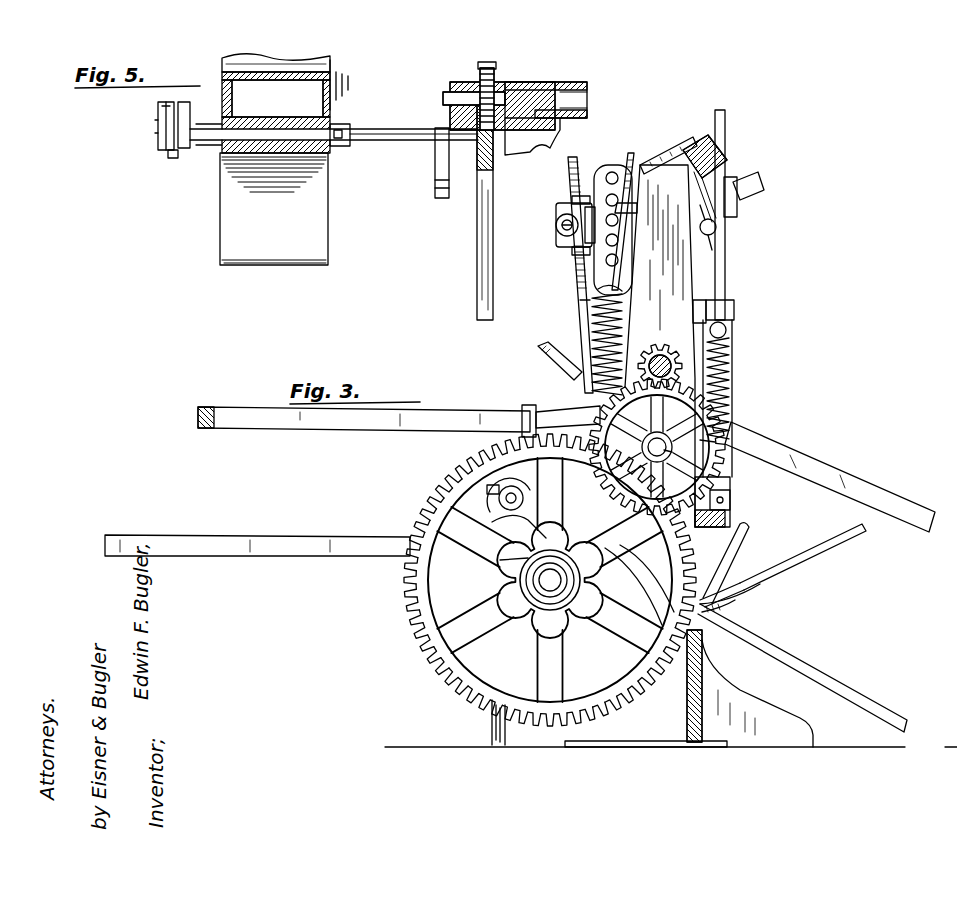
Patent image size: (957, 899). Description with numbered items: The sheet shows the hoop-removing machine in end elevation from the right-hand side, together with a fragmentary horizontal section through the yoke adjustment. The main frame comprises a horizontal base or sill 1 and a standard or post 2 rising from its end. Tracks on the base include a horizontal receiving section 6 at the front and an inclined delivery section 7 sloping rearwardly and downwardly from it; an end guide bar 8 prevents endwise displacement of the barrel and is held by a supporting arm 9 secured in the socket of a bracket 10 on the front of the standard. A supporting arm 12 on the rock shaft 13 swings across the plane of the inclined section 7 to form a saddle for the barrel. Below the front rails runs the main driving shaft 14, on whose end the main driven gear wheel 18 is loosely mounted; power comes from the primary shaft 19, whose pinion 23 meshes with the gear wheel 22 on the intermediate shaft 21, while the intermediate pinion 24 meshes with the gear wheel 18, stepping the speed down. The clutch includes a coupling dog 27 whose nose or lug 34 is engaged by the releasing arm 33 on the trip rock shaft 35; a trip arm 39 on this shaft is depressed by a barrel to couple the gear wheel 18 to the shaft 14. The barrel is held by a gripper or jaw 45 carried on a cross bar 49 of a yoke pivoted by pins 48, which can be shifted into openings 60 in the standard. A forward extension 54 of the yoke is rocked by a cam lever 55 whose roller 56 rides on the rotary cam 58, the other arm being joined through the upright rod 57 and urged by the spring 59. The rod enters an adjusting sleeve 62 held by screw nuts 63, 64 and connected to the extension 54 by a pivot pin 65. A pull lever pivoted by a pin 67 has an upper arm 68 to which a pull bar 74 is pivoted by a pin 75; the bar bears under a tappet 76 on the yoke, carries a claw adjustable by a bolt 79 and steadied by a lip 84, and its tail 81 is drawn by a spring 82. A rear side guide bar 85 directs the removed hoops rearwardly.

In FIG. 5, the base or sill 1 is at (388, 124).
In FIG. 5, the standard or post 2 is at (332, 96).
In FIG. 3, the standard or post 2 is at (644, 306).
In FIG. 3, the horizontal receiving rail section 6 is at (348, 543).
In FIG. 3, the inclined delivery rail section 7 is at (850, 656).
In FIG. 3, the end guide bar 8 is at (428, 432).
In FIG. 3, the supporting arm 9 is at (522, 414).
In FIG. 3, the bracket 10 is at (560, 412).
In FIG. 5, the supporting arm 12 is at (480, 268).
In FIG. 3, the supporting arm 12 is at (808, 552).
In FIG. 5, the rock shaft 13 is at (576, 112).
In FIG. 3, the main driving shaft 14 is at (545, 588).
In FIG. 3, the main driven gear wheel 18 is at (424, 646).
In FIG. 3, the primary shaft 19 is at (661, 346).
In FIG. 3, the intermediate shaft 21 is at (731, 490).
In FIG. 3, the gear wheel 22 is at (702, 442).
In FIG. 3, the pinion 23 is at (690, 368).
In FIG. 3, the intermediate pinion 24 is at (668, 452).
In FIG. 3, the coupling dog 27 is at (622, 590).
In FIG. 5, the releasing arm 33 is at (156, 122).
In FIG. 3, the releasing arm 33 is at (722, 606).
In FIG. 3, the nose or lug 34 is at (746, 588).
In FIG. 5, the trip rock shaft 35 is at (396, 140).
In FIG. 5, the trip arm 39 is at (436, 176).
In FIG. 3, the trip arm 39 is at (742, 540).
In FIG. 3, the gripper or jaw 45 is at (740, 196).
In FIG. 3, the pivot pin 48 is at (620, 200).
In FIG. 3, the cross bar 49 is at (665, 160).
In FIG. 3, the forward extension 54 is at (585, 170).
In FIG. 3, the cam lever 55 is at (510, 525).
In FIG. 3, the roller 56 is at (500, 494).
In FIG. 3, the upright rod 57 is at (582, 318).
In FIG. 3, the rotary cam 58 is at (527, 562).
In FIG. 3, the spring 59 is at (545, 349).
In FIG. 3, the openings 60 is at (598, 291).
In FIG. 3, the adjusting sleeve 62 is at (558, 214).
In FIG. 3, the screw nut 63 is at (572, 200).
In FIG. 3, the screw nut 64 is at (576, 255).
In FIG. 3, the pivot pin 65 is at (560, 230).
In FIG. 3, the pin 67 is at (731, 500).
In FIG. 3, the upper arm 68 is at (732, 352).
In FIG. 3, the pull bar 74 is at (726, 122).
In FIG. 3, the pin 75 is at (694, 312).
In FIG. 3, the tappet 76 is at (705, 140).
In FIG. 3, the bolt 79 is at (754, 176).
In FIG. 3, the tail or extension 81 is at (734, 312).
In FIG. 3, the spring 82 is at (726, 330).
In FIG. 3, the lip 84 is at (714, 232).
In FIG. 3, the rear side guide bar 85 is at (852, 484).